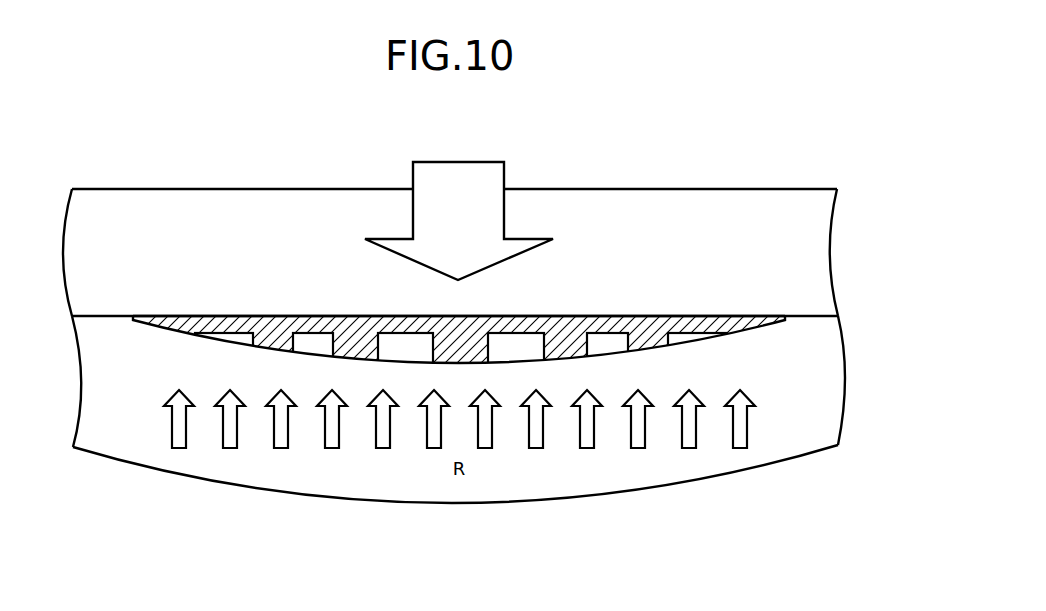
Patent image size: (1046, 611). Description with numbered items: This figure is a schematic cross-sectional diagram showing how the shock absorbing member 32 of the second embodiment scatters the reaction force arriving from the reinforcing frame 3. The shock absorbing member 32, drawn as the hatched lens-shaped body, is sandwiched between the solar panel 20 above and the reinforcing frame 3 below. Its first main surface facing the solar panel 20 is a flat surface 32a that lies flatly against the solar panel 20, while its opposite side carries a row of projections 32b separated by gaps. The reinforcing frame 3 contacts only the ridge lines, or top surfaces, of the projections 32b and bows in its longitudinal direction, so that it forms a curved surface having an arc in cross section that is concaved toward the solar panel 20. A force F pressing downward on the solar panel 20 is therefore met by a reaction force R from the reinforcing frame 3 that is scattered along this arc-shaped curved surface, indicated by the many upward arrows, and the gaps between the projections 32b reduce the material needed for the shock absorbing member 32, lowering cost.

The solar panel 20 is at (685, 213).
The reinforcing frame 3 is at (685, 465).
The shock absorbing member 32 is at (454, 347).
The flat surface 32a is at (606, 316).
The projections 32b is at (560, 363).